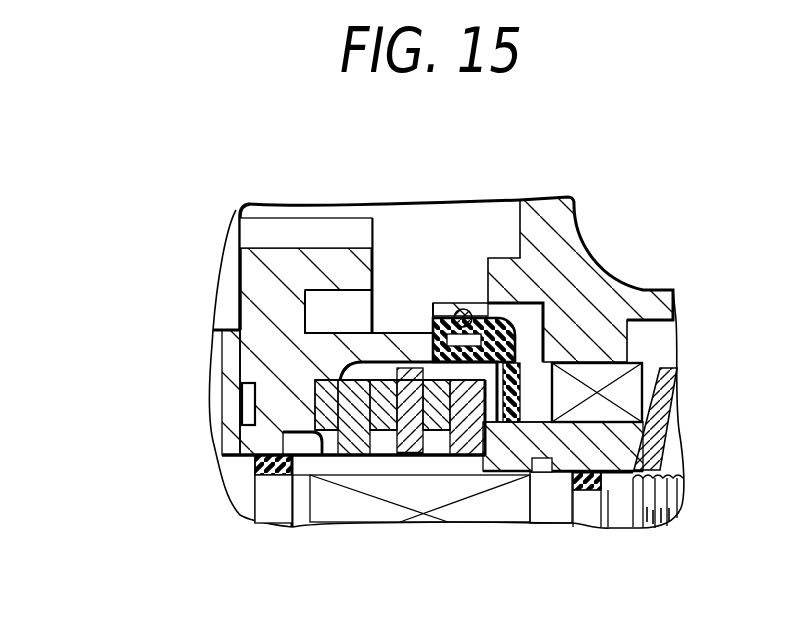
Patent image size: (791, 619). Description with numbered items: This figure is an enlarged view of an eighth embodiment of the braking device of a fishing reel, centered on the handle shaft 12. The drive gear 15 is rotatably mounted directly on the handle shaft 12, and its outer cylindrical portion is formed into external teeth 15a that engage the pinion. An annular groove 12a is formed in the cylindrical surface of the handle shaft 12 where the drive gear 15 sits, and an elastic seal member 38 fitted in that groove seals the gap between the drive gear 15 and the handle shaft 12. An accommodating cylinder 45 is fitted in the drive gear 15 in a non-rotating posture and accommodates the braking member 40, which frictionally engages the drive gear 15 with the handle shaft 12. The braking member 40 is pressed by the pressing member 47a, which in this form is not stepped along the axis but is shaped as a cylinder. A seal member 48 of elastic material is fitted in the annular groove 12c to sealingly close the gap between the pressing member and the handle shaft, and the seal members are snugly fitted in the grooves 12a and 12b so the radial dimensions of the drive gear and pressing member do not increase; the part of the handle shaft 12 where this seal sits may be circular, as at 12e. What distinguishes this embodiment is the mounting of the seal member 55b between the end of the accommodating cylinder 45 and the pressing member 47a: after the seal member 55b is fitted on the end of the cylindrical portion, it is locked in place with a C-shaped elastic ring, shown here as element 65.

The handle shaft 12 is at (622, 503).
The annular groove 12a is at (252, 475).
The annular groove 12b is at (417, 495).
The annular groove 12c is at (617, 479).
The circular portion of handle shaft 12e is at (550, 508).
The drive gear 15 is at (258, 302).
The external teeth 15a is at (293, 237).
The elastic seal member 38 is at (268, 478).
The braking member 40 is at (402, 358).
The accommodating cylinder 45 is at (380, 343).
The pressing member 47a is at (672, 410).
The seal member 48 is at (583, 495).
The seal member 55b is at (520, 333).
The ring 65 is at (468, 309).